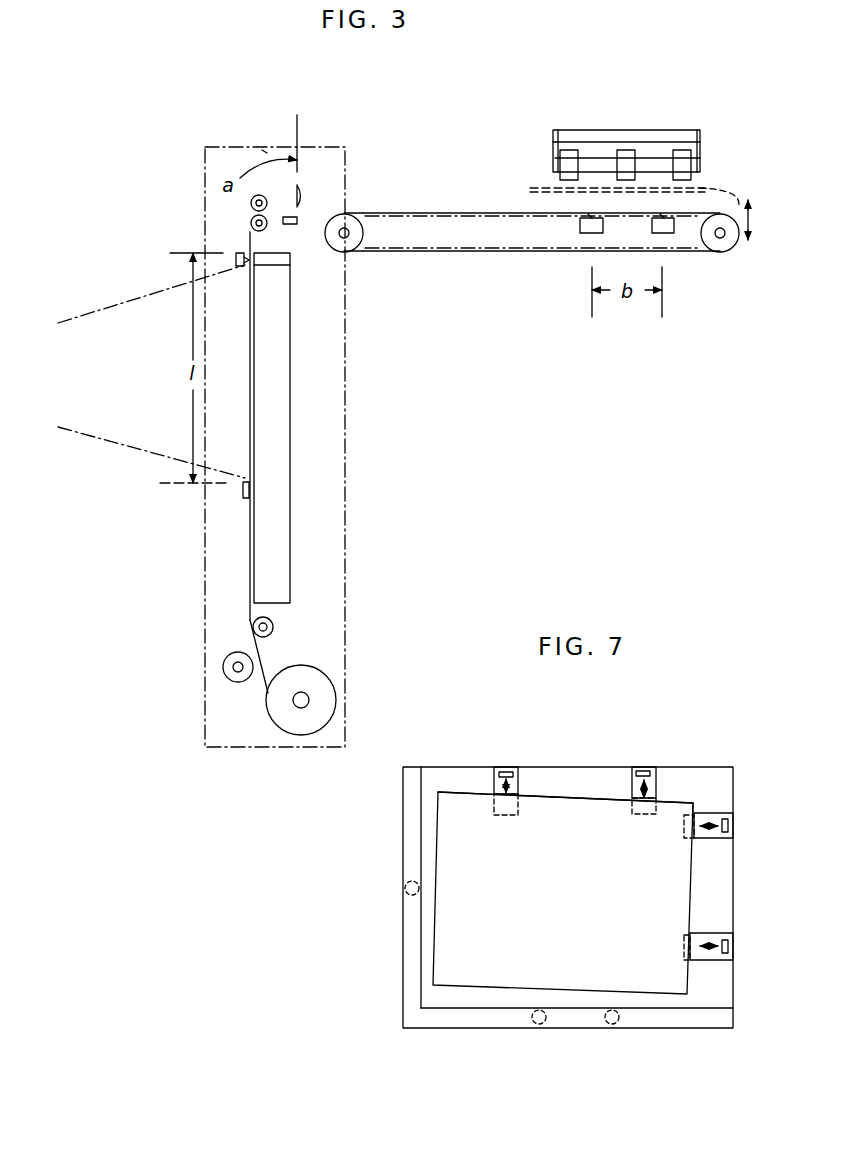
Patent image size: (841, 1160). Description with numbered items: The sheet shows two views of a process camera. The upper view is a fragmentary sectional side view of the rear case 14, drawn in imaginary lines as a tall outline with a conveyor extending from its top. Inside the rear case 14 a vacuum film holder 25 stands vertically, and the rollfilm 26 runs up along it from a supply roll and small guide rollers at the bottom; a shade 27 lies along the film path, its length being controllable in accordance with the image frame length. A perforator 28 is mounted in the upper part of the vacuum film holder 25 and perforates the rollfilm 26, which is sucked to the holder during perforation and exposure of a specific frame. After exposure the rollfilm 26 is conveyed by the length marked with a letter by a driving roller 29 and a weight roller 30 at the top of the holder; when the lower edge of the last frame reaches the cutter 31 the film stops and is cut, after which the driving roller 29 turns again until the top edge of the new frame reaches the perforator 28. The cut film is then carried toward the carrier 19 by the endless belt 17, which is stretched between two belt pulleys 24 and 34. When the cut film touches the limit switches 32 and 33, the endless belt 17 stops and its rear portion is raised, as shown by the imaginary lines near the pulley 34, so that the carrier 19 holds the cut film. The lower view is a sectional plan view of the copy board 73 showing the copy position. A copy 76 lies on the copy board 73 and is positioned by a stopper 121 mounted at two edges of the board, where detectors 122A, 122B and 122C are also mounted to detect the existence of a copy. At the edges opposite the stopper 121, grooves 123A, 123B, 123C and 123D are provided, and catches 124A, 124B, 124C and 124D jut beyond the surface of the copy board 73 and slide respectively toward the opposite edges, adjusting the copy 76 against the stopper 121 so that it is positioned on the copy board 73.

In FIG. 3, the rear case 14 is at (350, 522).
In FIG. 3, the endless belt 17 is at (478, 210).
In FIG. 3, the carrier 19 is at (650, 130).
In FIG. 3, the belt pulley 24 is at (363, 233).
In FIG. 3, the vacuum film holder 25 is at (290, 440).
In FIG. 3, the rollfilm 26 is at (305, 670).
In FIG. 3, the shade 27 is at (250, 533).
In FIG. 3, the perforator 28 is at (240, 270).
In FIG. 3, the driving roller 29 is at (262, 232).
In FIG. 3, the weight roller 30 is at (262, 195).
In FIG. 3, the cutter 31 is at (303, 195).
In FIG. 3, the limit switch 32 is at (585, 235).
In FIG. 3, the limit switch 33 is at (670, 235).
In FIG. 3, the belt pulley 34 is at (733, 240).
In FIG. 7, the copy board 73 is at (725, 792).
In FIG. 7, the copy 76 is at (563, 893).
In FIG. 7, the stopper 121 is at (410, 987).
In FIG. 7, the detector 122A is at (408, 893).
In FIG. 7, the detector 122B is at (539, 1024).
In FIG. 7, the detector 122C is at (612, 1024).
In FIG. 7, the groove 123A is at (520, 785).
In FIG. 7, the groove 123B is at (657, 790).
In FIG. 7, the groove 123C is at (710, 840).
In FIG. 7, the groove 123D is at (710, 962).
In FIG. 7, the catch 124A is at (508, 766).
In FIG. 7, the catch 124B is at (650, 766).
In FIG. 7, the catch 124C is at (732, 825).
In FIG. 7, the catch 124D is at (732, 943).